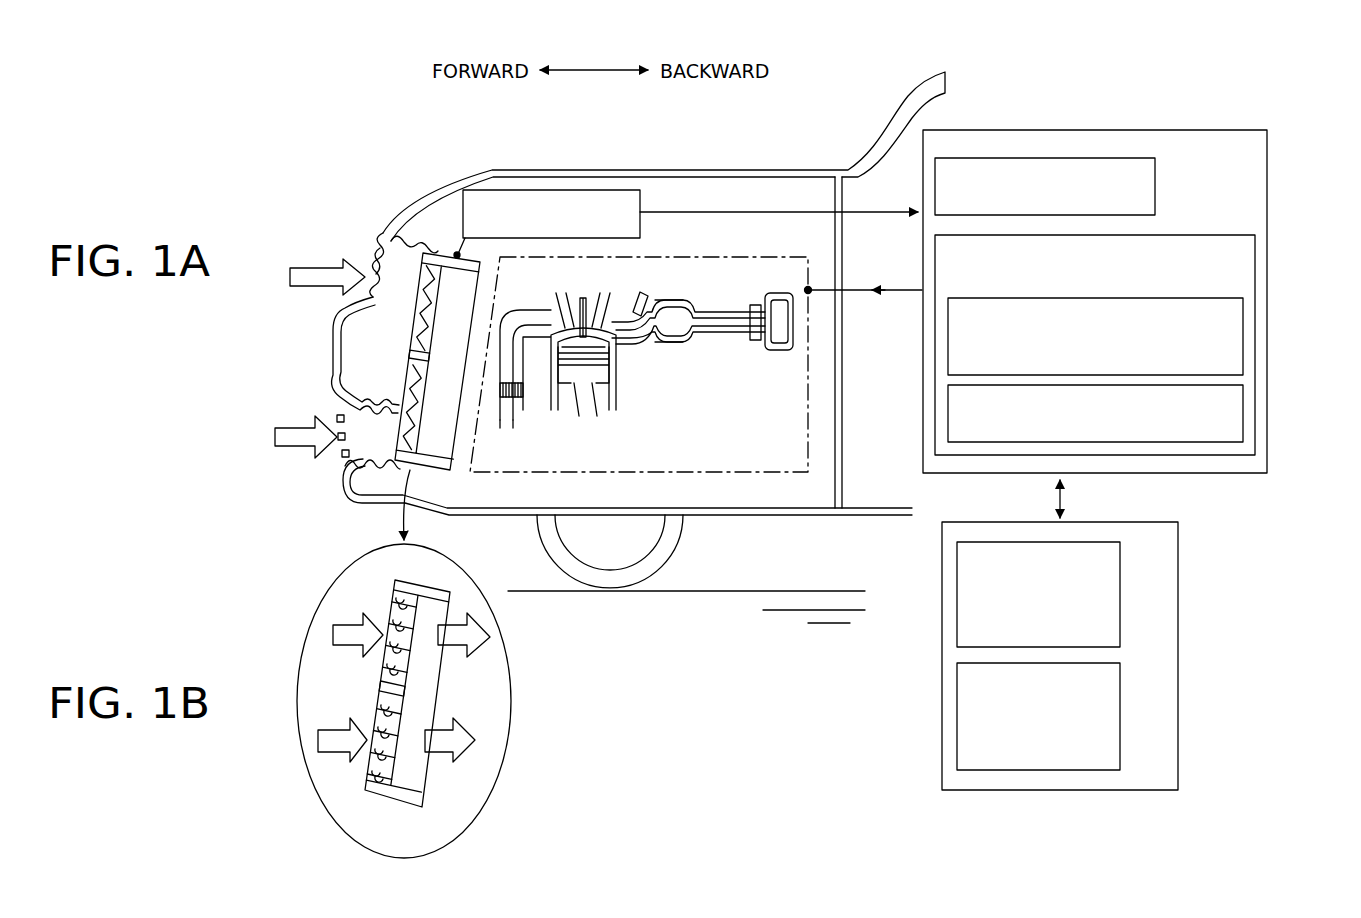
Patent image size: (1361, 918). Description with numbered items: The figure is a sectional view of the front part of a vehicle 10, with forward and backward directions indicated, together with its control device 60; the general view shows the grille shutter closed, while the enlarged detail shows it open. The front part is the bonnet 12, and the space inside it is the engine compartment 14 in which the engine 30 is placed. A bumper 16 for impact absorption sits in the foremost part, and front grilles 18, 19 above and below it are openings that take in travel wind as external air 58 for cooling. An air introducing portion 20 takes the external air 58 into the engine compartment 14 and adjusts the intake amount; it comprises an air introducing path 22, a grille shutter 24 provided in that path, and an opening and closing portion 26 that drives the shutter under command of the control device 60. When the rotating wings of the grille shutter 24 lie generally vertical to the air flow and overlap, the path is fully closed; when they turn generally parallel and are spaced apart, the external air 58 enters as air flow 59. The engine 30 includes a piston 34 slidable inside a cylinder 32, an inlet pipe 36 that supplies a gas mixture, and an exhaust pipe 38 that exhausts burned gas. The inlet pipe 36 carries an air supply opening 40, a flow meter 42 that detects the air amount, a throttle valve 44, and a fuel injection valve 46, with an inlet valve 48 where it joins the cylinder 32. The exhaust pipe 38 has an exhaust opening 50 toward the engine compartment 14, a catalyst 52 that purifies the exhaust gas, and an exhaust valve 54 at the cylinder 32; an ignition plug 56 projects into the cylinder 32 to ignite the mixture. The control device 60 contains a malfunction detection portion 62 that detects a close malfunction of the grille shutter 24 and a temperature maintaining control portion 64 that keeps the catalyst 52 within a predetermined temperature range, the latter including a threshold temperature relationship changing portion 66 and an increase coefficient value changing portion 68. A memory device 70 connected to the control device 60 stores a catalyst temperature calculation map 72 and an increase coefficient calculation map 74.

In FIG. 1A, the vehicle 10 is at (326, 160).
In FIG. 1A, the bonnet 12 is at (786, 170).
In FIG. 1A, the engine compartment 14 is at (688, 202).
In FIG. 1A, the bumper 16 is at (331, 356).
In FIG. 1A, the front grille 18 is at (374, 262).
In FIG. 1A, the front grille 19 is at (345, 458).
In FIG. 1A, the air introducing portion 20 is at (486, 129).
In FIG. 1A, the air introducing path 22 is at (452, 250).
In FIG. 1A, the grille shutter 24 is at (417, 288).
In FIG. 1B, the grille shutter 24 is at (397, 602).
In FIG. 1A, the opening and closing portion 26 is at (477, 186).
In FIG. 1A, the engine 30 is at (748, 472).
In FIG. 1A, the cylinder 32 is at (606, 342).
In FIG. 1A, the piston 34 is at (597, 396).
In FIG. 1A, the inlet pipe 36 is at (692, 301).
In FIG. 1A, the exhaust pipe 38 is at (512, 310).
In FIG. 1A, the air supply opening 40 is at (781, 352).
In FIG. 1A, the flow meter 42 is at (753, 340).
In FIG. 1A, the throttle valve 44 is at (703, 318).
In FIG. 1A, the fuel injection valve 46 is at (643, 294).
In FIG. 1A, the inlet valve 48 is at (608, 305).
In FIG. 1A, the exhaust opening 50 is at (517, 421).
In FIG. 1A, the catalyst 52 is at (524, 394).
In FIG. 1A, the exhaust valve 54 is at (555, 310).
In FIG. 1A, the ignition plug 56 is at (582, 298).
In FIG. 1A, the external air 58 is at (290, 278).
In FIG. 1B, the external air 58 is at (346, 647).
In FIG. 1B, the air flow 59 is at (458, 648).
In FIG. 1A, the control device 60 is at (1143, 130).
In FIG. 1A, the malfunction detection portion 62 is at (1156, 167).
In FIG. 1A, the temperature maintaining control portion 64 is at (1240, 235).
In FIG. 1A, the threshold temperature relationship changing portion 66 is at (1243, 337).
In FIG. 1A, the increase coefficient value changing portion 68 is at (1243, 412).
In FIG. 1A, the memory device 70 is at (1178, 632).
In FIG. 1A, the catalyst temperature calculation map 72 is at (1121, 596).
In FIG. 1A, the increase coefficient calculation map 74 is at (1121, 706).